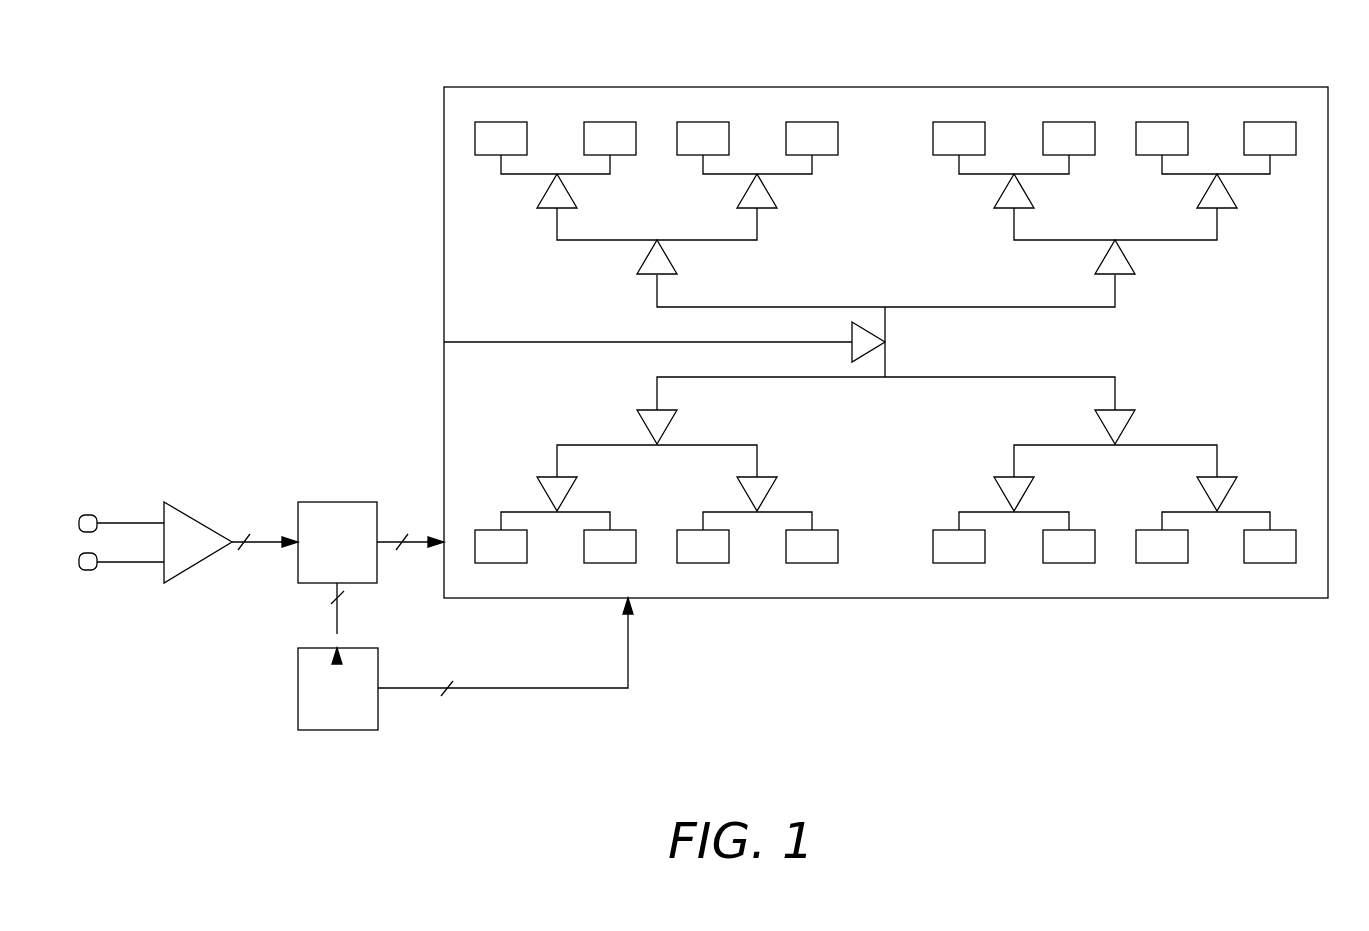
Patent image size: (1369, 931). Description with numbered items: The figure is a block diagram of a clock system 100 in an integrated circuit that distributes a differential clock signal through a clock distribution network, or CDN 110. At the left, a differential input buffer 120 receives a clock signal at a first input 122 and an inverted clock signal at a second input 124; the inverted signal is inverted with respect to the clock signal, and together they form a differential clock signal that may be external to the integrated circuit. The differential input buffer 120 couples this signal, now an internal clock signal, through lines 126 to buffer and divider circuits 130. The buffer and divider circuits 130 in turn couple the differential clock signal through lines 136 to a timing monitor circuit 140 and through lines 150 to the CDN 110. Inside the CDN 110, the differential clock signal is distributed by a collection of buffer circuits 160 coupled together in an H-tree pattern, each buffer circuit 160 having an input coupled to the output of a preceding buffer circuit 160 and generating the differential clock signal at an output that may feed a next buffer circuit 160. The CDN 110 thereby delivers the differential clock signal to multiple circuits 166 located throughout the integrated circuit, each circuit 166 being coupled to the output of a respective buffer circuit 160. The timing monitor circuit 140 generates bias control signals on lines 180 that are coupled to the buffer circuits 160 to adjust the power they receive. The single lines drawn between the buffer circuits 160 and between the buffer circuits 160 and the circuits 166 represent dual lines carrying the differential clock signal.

The clock system 100 is at (192, 113).
The CDN 110 is at (885, 87).
The differential input buffer 120 is at (199, 520).
The first input 122 is at (103, 520).
The second input 124 is at (107, 565).
The lines 126 is at (268, 545).
The buffer and divider circuits 130 is at (318, 500).
The lines 136 is at (339, 616).
The timing monitor circuit 140 is at (318, 648).
The lines 150 is at (415, 536).
The buffer circuits 160 is at (538, 200).
The circuits 166 is at (703, 122).
The lines 180 is at (630, 656).